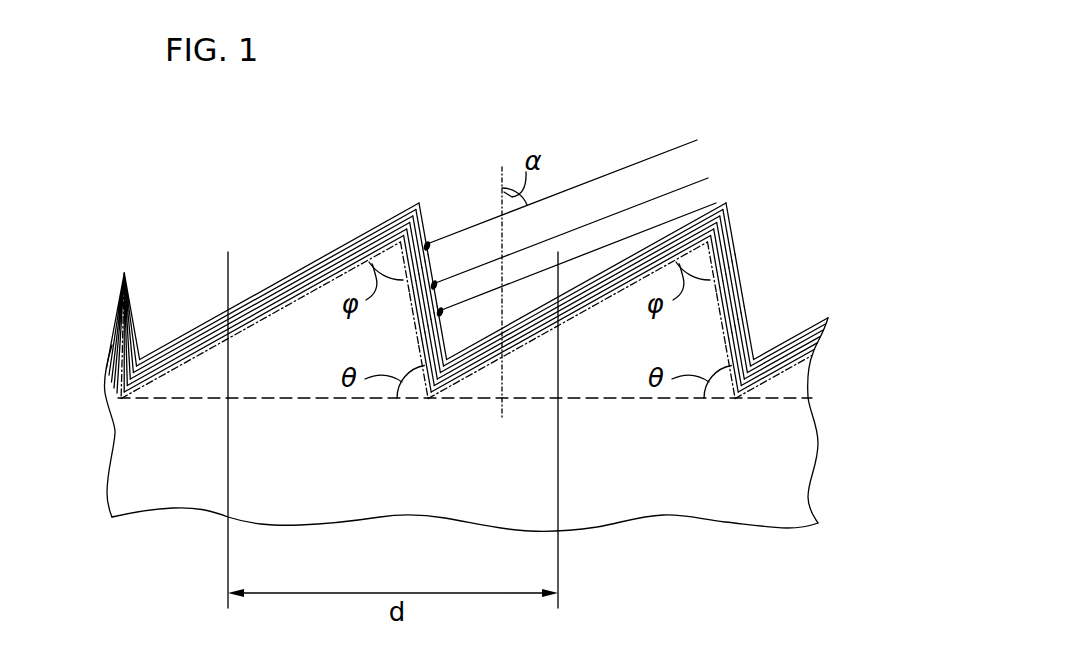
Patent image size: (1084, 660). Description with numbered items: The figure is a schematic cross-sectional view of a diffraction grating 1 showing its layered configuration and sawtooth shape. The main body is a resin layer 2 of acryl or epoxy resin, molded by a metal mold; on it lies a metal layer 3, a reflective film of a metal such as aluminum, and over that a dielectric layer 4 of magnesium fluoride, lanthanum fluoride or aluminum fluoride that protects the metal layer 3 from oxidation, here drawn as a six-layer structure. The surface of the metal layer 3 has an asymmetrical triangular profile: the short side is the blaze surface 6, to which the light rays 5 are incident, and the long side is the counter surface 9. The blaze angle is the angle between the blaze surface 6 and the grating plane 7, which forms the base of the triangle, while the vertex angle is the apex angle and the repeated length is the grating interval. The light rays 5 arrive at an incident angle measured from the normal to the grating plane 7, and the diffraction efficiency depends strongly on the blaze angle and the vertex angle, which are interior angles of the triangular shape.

The diffraction grating 1 is at (266, 189).
The resin layer 2 is at (198, 428).
The metal layer 3 is at (433, 267).
The dielectric layer 4 is at (424, 230).
The light rays 5 is at (610, 245).
The blaze surface 6 is at (443, 333).
The grating plane 7 is at (172, 400).
The counter surface 9 is at (306, 267).